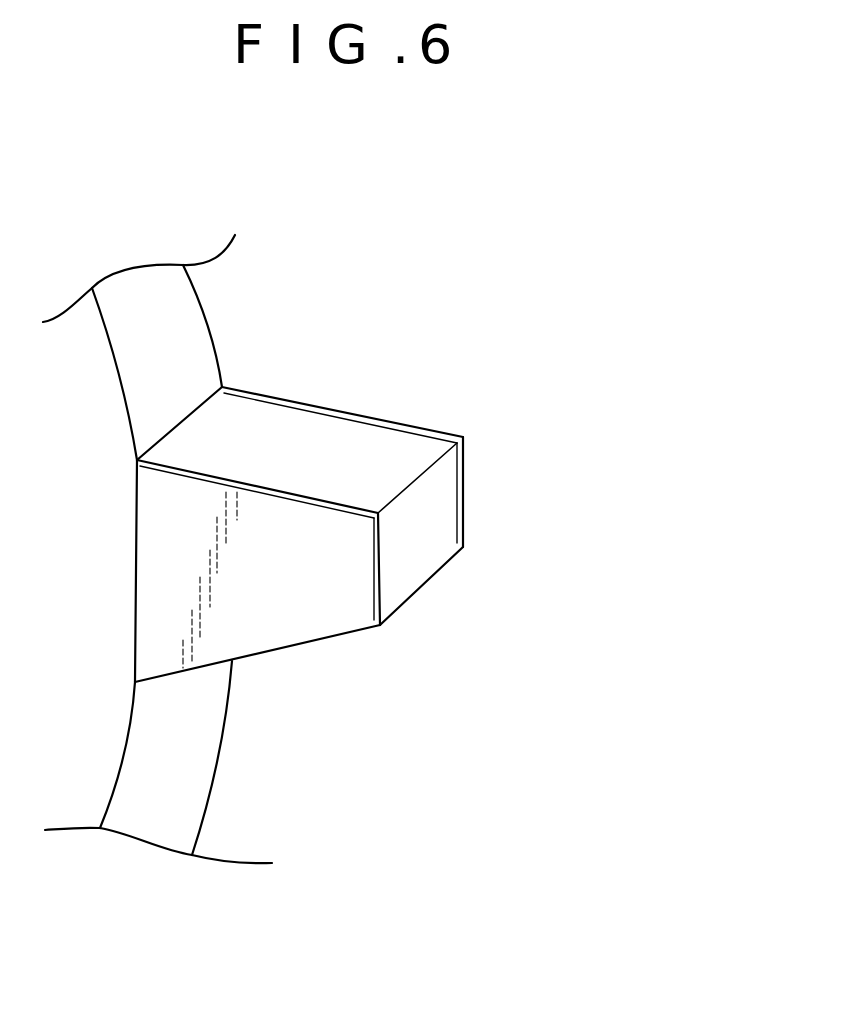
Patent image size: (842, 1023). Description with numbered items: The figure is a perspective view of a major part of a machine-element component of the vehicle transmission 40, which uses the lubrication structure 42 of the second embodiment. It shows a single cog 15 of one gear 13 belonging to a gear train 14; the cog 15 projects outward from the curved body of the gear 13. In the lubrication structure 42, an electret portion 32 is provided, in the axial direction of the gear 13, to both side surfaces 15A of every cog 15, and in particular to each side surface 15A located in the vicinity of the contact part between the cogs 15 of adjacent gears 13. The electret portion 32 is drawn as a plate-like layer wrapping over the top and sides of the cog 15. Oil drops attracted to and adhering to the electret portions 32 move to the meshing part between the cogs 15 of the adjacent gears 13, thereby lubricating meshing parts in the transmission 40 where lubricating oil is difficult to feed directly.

The gear 13 is at (214, 549).
The gear train 14 is at (212, 332).
The electret portion 32 is at (348, 535).
The lubrication structure 42 is at (342, 408).
The cog 15 is at (428, 592).
The side surface of cog 15A is at (464, 515).
The vehicle transmission 40 is at (562, 367).